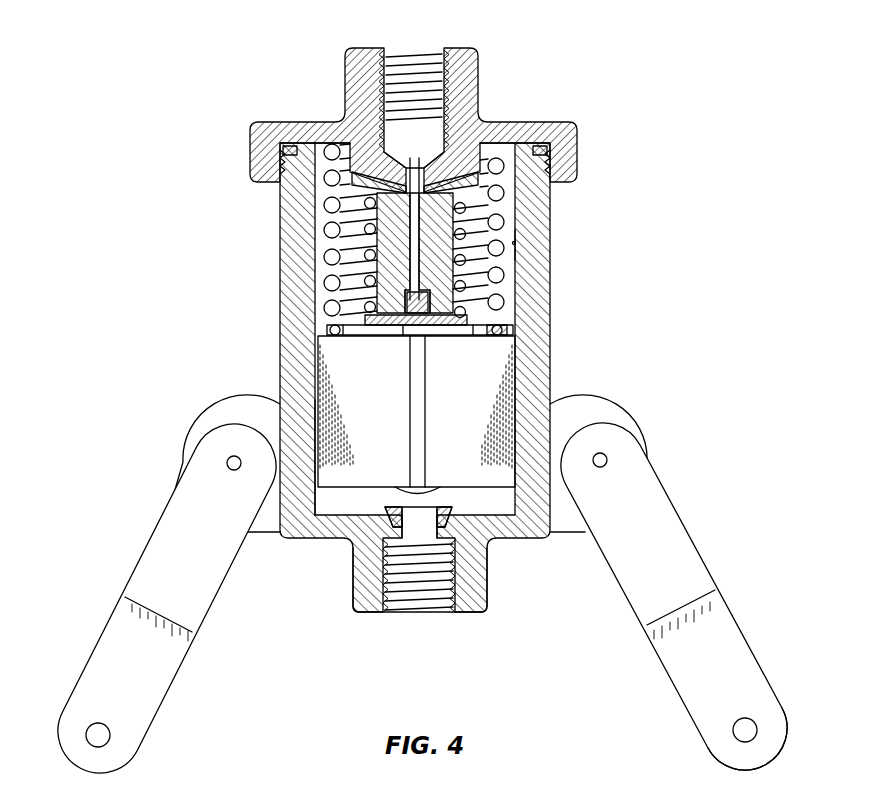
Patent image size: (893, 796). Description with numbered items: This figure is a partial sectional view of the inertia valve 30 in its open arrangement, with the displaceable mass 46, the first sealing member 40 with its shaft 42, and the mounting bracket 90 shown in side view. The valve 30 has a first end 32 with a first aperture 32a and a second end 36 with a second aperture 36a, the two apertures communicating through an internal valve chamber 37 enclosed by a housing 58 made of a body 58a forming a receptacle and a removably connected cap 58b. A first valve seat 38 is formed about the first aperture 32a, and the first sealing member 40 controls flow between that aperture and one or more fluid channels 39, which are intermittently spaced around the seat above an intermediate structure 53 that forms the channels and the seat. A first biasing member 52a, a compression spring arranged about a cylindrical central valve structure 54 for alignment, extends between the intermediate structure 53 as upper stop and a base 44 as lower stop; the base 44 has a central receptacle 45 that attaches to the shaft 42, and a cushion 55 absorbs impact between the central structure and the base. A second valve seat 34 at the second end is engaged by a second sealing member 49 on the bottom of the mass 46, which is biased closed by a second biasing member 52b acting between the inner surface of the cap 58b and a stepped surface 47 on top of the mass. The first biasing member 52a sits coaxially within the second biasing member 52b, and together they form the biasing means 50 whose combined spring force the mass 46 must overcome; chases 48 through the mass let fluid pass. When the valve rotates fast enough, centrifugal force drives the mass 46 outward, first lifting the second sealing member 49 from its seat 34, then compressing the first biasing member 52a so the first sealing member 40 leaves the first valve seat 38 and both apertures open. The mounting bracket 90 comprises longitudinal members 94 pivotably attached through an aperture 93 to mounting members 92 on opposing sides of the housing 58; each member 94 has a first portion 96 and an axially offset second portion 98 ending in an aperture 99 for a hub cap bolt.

The inertia valve 30 is at (275, 671).
The first end 32 is at (413, 99).
The first aperture 32a is at (402, 80).
The second valve seat 34 is at (392, 522).
The second end 36 is at (420, 606).
The second aperture 36a is at (432, 584).
The internal valve chamber 37 is at (517, 244).
The first valve seat 38 is at (486, 140).
The fluid channels 39 is at (360, 186).
The first sealing member 40 is at (405, 160).
The shaft 42 is at (420, 258).
The base 44 is at (468, 322).
The central receptacle 45 is at (428, 295).
The mass 46 is at (416, 415).
The stepped surface 47 is at (515, 328).
The chases 48 is at (409, 420).
The second sealing member 49 is at (432, 490).
The biasing means 50 is at (359, 238).
The first biasing member 52a is at (370, 262).
The second biasing member 52b is at (330, 290).
The intermediate structure 53 is at (462, 185).
The cylindrical central valve structure 54 is at (390, 212).
The cushion 55 is at (386, 306).
The valve housing 58 is at (382, 346).
The body 58a is at (284, 330).
The cap 58b is at (285, 142).
The mounting bracket 90 is at (423, 570).
The mounting members 92 is at (577, 398).
The aperture 93 is at (602, 452).
The longitudinal member 94 is at (684, 526).
The first portion 96 is at (634, 572).
The second portion 98 is at (753, 700).
The aperture 99 is at (733, 728).